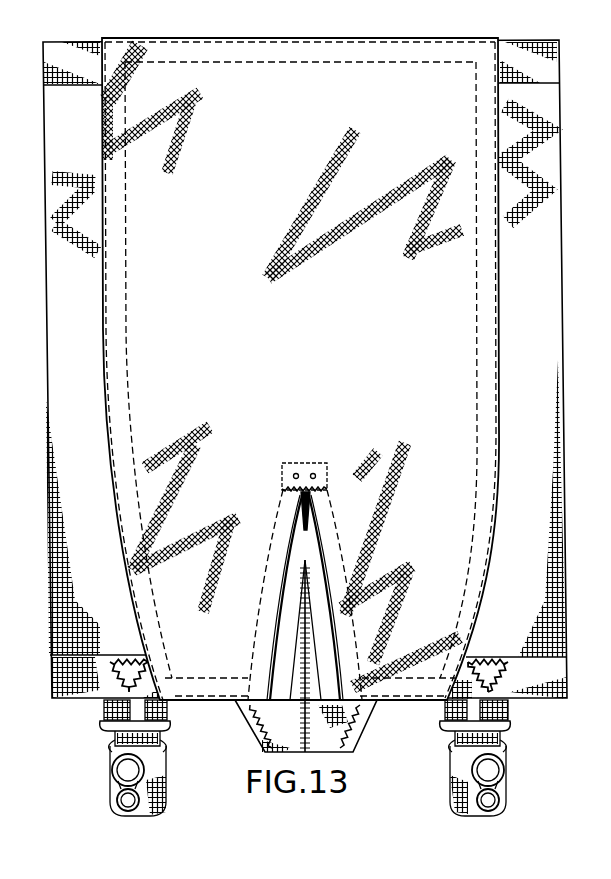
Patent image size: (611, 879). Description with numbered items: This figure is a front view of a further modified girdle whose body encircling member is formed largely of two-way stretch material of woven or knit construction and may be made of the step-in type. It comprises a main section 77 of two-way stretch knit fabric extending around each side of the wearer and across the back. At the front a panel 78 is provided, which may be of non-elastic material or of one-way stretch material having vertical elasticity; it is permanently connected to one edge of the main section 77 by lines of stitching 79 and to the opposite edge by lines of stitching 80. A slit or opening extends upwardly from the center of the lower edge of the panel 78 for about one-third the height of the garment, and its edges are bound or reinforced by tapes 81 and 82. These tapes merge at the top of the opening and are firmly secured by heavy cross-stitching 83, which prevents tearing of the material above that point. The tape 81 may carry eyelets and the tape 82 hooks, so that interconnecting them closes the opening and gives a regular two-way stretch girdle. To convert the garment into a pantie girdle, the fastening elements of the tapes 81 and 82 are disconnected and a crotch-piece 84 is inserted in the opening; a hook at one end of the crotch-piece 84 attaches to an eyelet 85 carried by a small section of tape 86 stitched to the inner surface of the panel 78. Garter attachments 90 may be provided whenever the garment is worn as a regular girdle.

The main section 77 is at (53, 243).
The panel 78 is at (462, 280).
The lines of stitching 79 is at (497, 330).
The lines of stitching 80 is at (108, 270).
The reinforcing tape 81 is at (360, 582).
The reinforcing tape 82 is at (262, 565).
The heavy cross-stitching 83 is at (290, 487).
The crotch-piece 84 is at (352, 713).
The eyelet 85 is at (312, 478).
The section of tape 86 is at (296, 463).
The garter attachments 90 is at (155, 765).